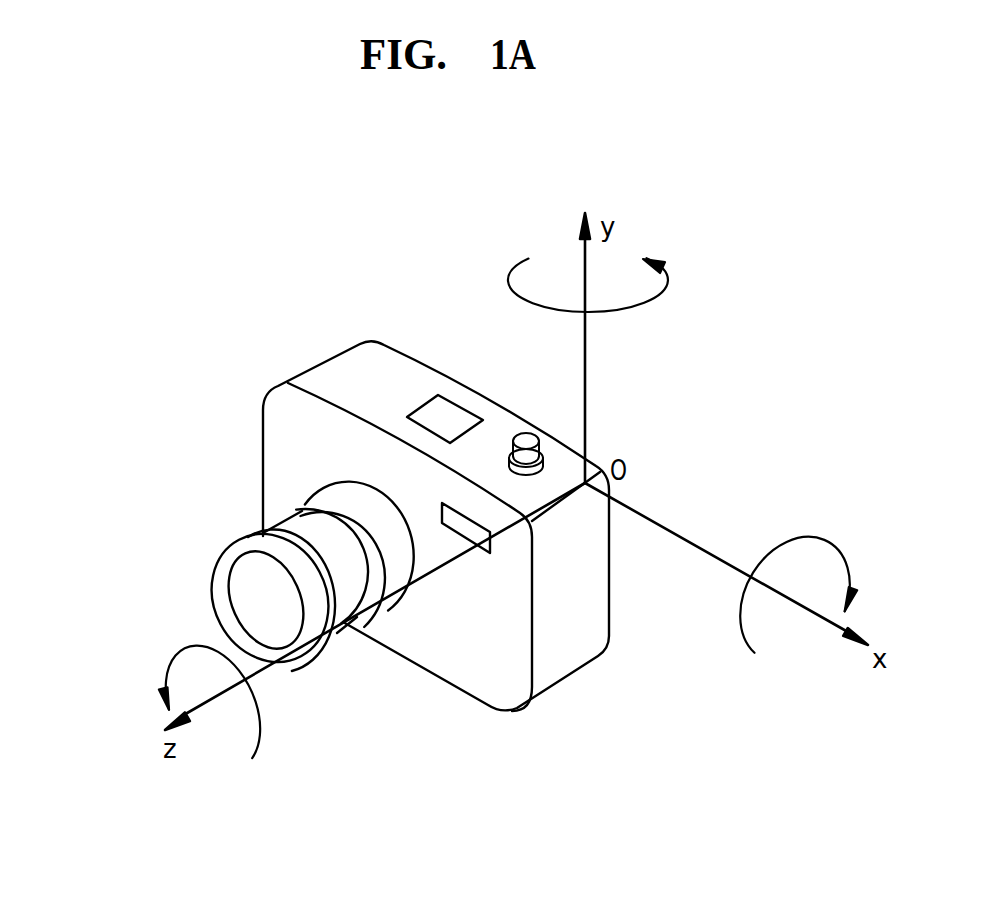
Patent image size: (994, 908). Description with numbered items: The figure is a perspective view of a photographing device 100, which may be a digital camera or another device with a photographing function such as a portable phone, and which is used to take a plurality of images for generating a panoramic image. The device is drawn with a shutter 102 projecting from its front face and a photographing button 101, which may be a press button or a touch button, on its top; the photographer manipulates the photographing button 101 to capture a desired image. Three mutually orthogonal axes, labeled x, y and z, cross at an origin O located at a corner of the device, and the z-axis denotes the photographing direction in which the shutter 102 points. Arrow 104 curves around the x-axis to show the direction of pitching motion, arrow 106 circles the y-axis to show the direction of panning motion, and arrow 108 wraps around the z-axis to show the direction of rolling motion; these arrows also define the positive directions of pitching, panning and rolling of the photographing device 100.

The photographing device 100 is at (382, 368).
The photographing button 101 is at (525, 432).
The shutter 102 is at (255, 600).
The arrow 104 is at (826, 539).
The arrow 106 is at (636, 308).
The arrow 108 is at (252, 758).